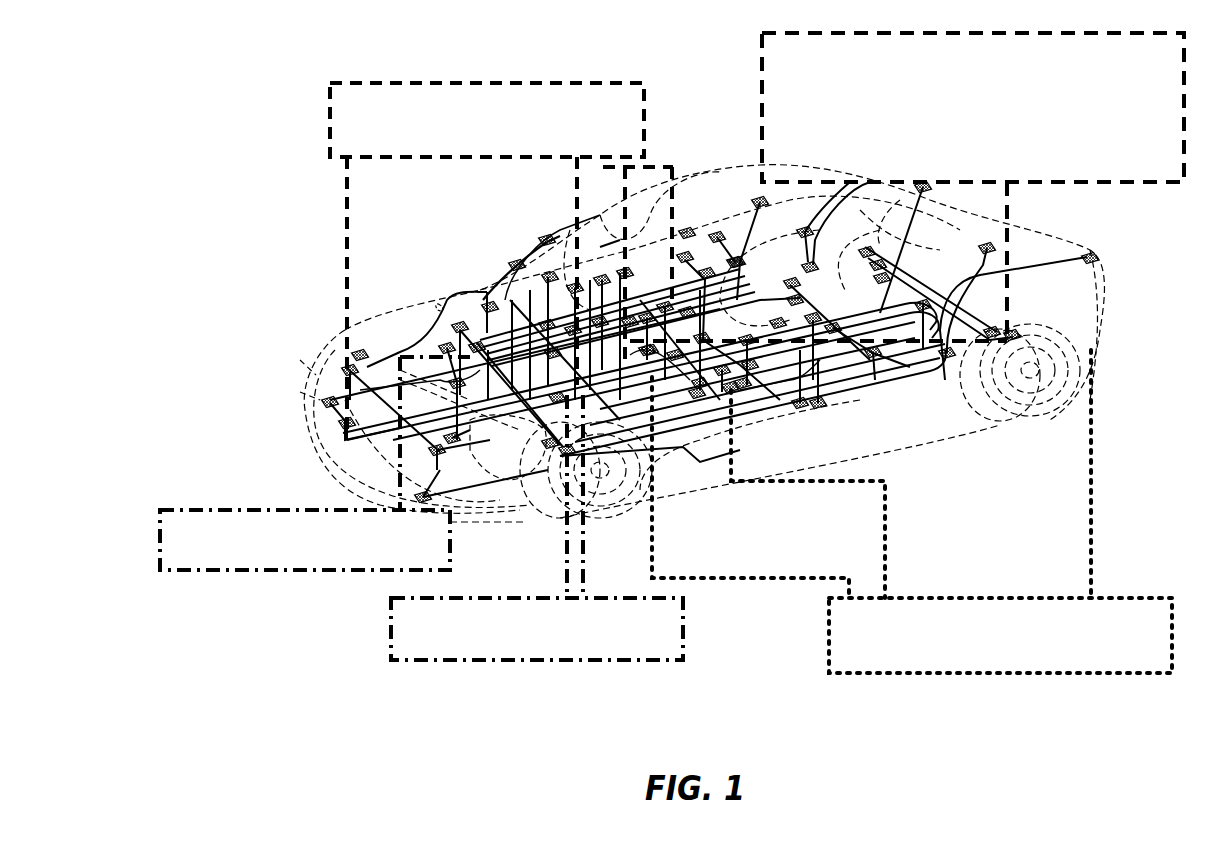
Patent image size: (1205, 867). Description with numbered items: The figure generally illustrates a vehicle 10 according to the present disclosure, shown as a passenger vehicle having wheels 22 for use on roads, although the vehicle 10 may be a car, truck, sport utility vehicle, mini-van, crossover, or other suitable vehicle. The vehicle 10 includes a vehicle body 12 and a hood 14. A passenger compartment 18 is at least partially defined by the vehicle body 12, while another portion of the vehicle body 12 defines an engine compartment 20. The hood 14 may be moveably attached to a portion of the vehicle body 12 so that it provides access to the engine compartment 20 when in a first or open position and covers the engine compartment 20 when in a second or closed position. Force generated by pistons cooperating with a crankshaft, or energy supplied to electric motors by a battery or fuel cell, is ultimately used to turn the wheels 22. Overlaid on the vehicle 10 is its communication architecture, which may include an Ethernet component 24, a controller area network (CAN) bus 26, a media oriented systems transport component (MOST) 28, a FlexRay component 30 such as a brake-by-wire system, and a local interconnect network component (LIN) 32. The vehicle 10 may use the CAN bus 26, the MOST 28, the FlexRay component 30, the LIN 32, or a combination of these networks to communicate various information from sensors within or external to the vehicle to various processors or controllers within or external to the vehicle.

The vehicle 10 is at (132, 168).
The vehicle body 12 is at (676, 292).
The hood 14 is at (432, 296).
The passenger compartment 18 is at (596, 245).
The engine compartment 20 is at (284, 360).
The wheels 22 is at (545, 500).
The Ethernet component 24 is at (150, 540).
The controller area network (CAN) bus 26 is at (320, 112).
The media oriented systems transport component (MOST) 28 is at (746, 96).
The FlexRay component 30 is at (377, 626).
The local interconnect network component (LIN) 32 is at (813, 628).